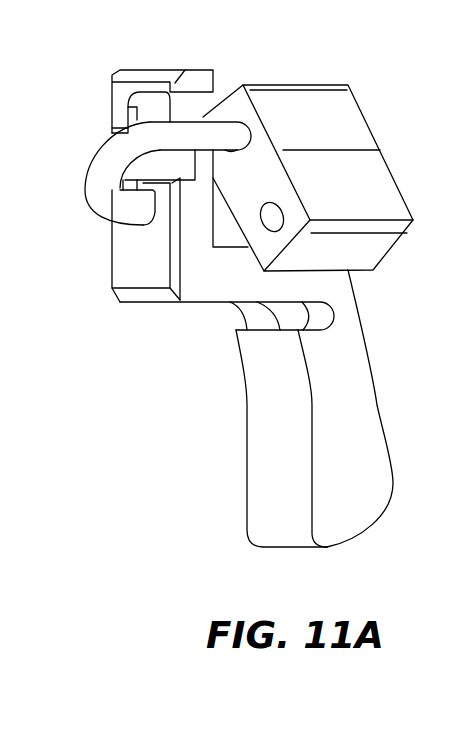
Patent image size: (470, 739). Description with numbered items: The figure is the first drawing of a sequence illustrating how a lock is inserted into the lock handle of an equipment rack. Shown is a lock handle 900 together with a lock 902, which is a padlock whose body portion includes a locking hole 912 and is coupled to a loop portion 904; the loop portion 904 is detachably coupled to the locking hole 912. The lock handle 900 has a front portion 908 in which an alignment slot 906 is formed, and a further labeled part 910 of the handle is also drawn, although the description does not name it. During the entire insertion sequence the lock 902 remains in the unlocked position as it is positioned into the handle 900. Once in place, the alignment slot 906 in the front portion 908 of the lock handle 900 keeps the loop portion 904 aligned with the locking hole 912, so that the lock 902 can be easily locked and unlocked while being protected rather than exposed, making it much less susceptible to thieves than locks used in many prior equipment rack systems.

The lock handle 900 is at (363, 490).
The lock 902 is at (382, 185).
The loop portion 904 is at (110, 168).
The alignment slot 906 is at (150, 187).
The front portion 908 is at (142, 268).
The top plate 910 is at (155, 102).
The locking hole 912 is at (270, 228).